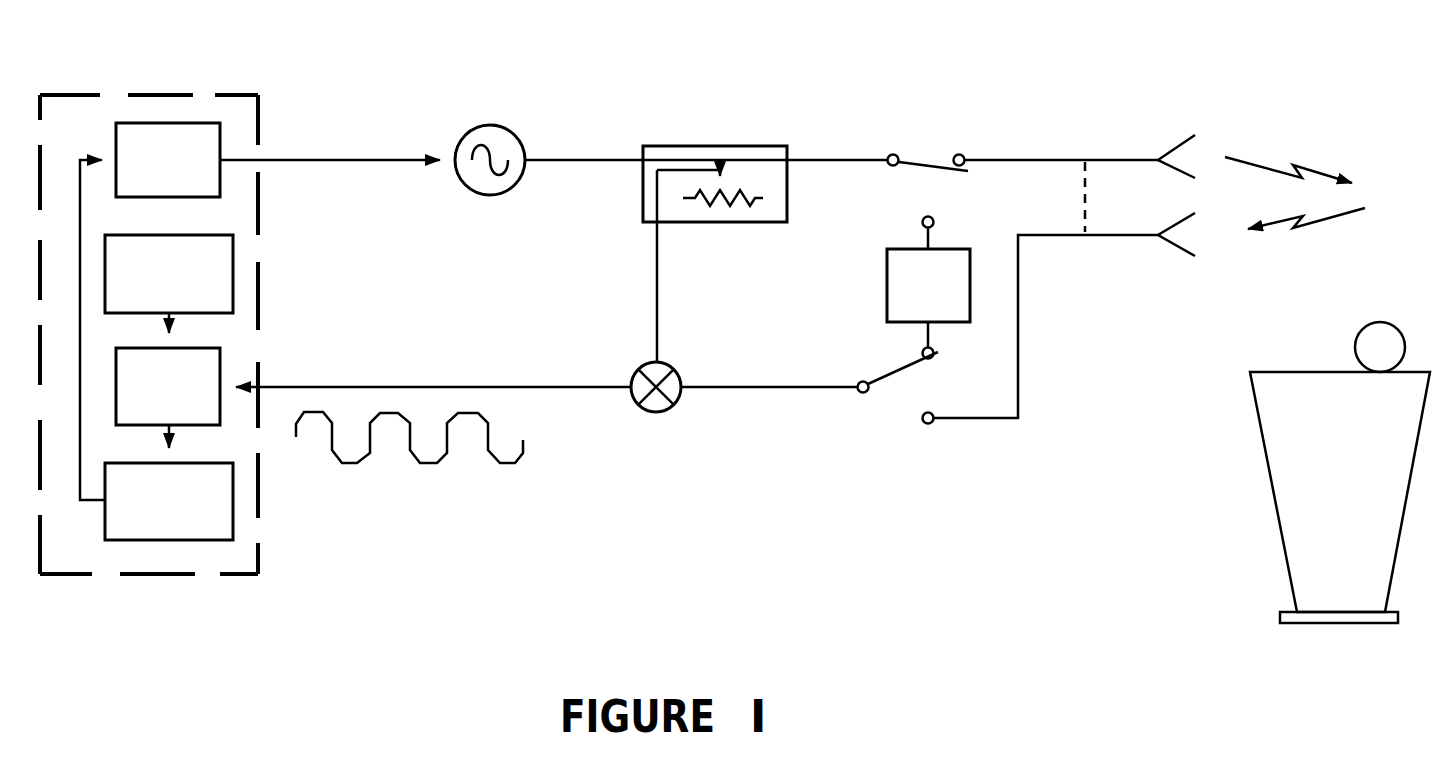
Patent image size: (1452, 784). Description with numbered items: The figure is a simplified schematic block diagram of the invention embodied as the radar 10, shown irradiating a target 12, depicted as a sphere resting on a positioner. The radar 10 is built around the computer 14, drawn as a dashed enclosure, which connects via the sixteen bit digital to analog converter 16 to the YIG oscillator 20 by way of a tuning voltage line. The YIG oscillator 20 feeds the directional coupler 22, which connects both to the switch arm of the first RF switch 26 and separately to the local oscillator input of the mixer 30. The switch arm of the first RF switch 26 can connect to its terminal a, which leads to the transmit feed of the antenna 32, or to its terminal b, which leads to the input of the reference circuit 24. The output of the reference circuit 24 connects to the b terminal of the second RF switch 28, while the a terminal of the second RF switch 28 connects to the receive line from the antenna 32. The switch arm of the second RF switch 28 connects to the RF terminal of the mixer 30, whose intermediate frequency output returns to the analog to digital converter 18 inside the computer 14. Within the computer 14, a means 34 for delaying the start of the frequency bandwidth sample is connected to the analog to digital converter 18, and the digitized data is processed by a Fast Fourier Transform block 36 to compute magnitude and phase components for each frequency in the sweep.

The radar 10 is at (848, 92).
The target 12 is at (1240, 455).
The computer 14 is at (242, 577).
The 16 bit digital to analog converter 16 is at (207, 124).
The analog to digital converter 18 is at (210, 349).
The YIG oscillator 20 is at (460, 184).
The directional coupler 22 is at (713, 222).
The reference circuit 24 is at (887, 285).
The first RF switch 26 is at (935, 135).
The second RF switch 28 is at (942, 388).
The mixer 30 is at (668, 410).
The antenna 32 is at (1195, 140).
The means for delaying the start of the frequency bandwidth sample 34 is at (233, 252).
The compute FFT 36 is at (233, 522).